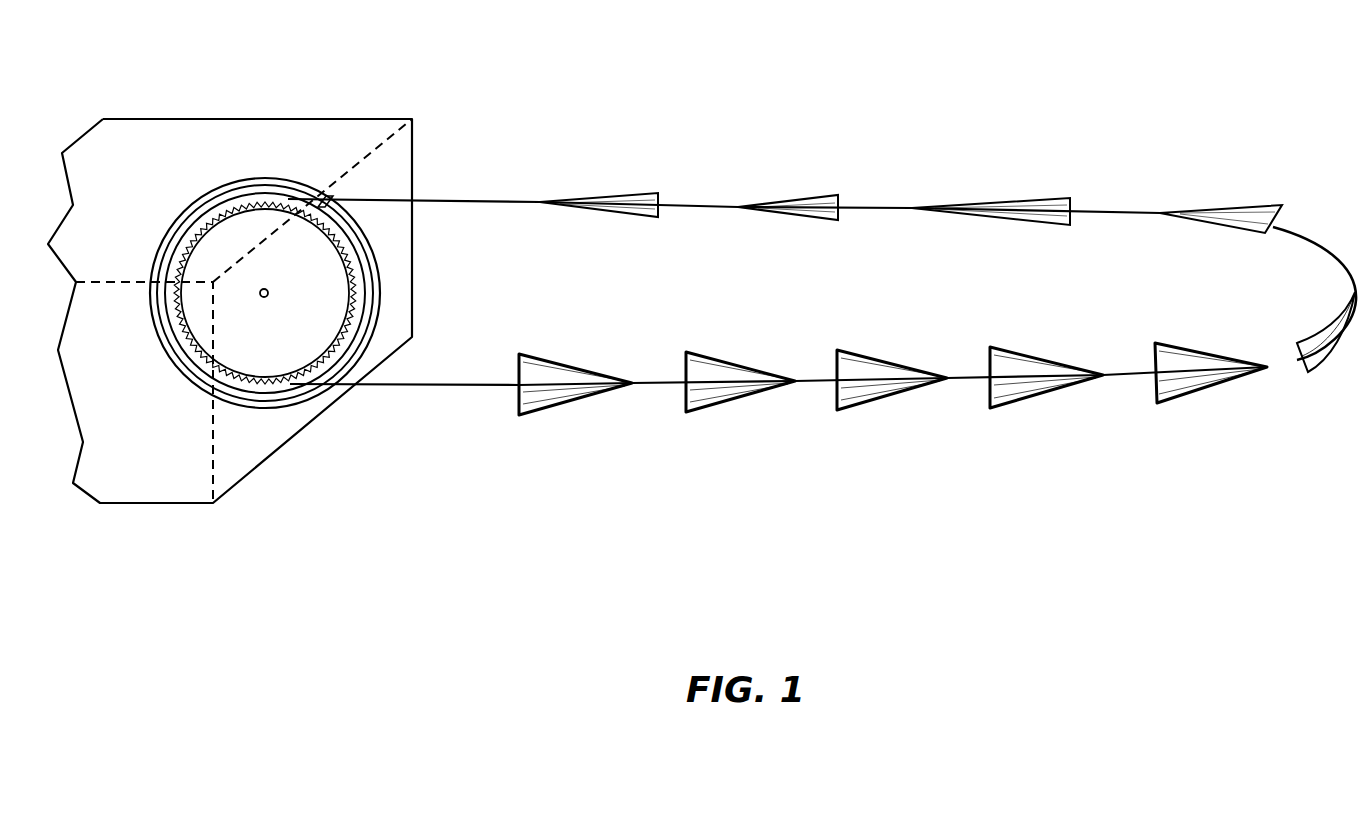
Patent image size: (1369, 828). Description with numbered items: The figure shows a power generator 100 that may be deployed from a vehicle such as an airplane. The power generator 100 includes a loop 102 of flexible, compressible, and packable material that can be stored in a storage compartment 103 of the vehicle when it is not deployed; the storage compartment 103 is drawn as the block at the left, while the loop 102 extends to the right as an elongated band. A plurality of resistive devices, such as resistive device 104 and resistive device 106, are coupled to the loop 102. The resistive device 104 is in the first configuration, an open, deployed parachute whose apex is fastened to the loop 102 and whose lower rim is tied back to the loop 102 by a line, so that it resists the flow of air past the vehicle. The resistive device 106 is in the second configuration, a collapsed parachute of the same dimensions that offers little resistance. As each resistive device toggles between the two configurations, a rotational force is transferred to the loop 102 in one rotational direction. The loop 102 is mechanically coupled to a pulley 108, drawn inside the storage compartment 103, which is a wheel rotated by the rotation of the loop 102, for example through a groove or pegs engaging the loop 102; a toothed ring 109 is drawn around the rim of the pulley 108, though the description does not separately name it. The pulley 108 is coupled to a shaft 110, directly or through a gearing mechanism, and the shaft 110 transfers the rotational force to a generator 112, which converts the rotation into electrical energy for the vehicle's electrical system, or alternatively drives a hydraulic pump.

The power generator 100 is at (1187, 637).
The loop 102 is at (916, 191).
The storage compartment 103 is at (313, 104).
The resistive device 104 is at (751, 431).
The resistive device 106 is at (786, 180).
The pulley 108 is at (333, 305).
The toothed ring 109 is at (366, 239).
The shaft 110 is at (266, 320).
The generator 112 is at (214, 172).